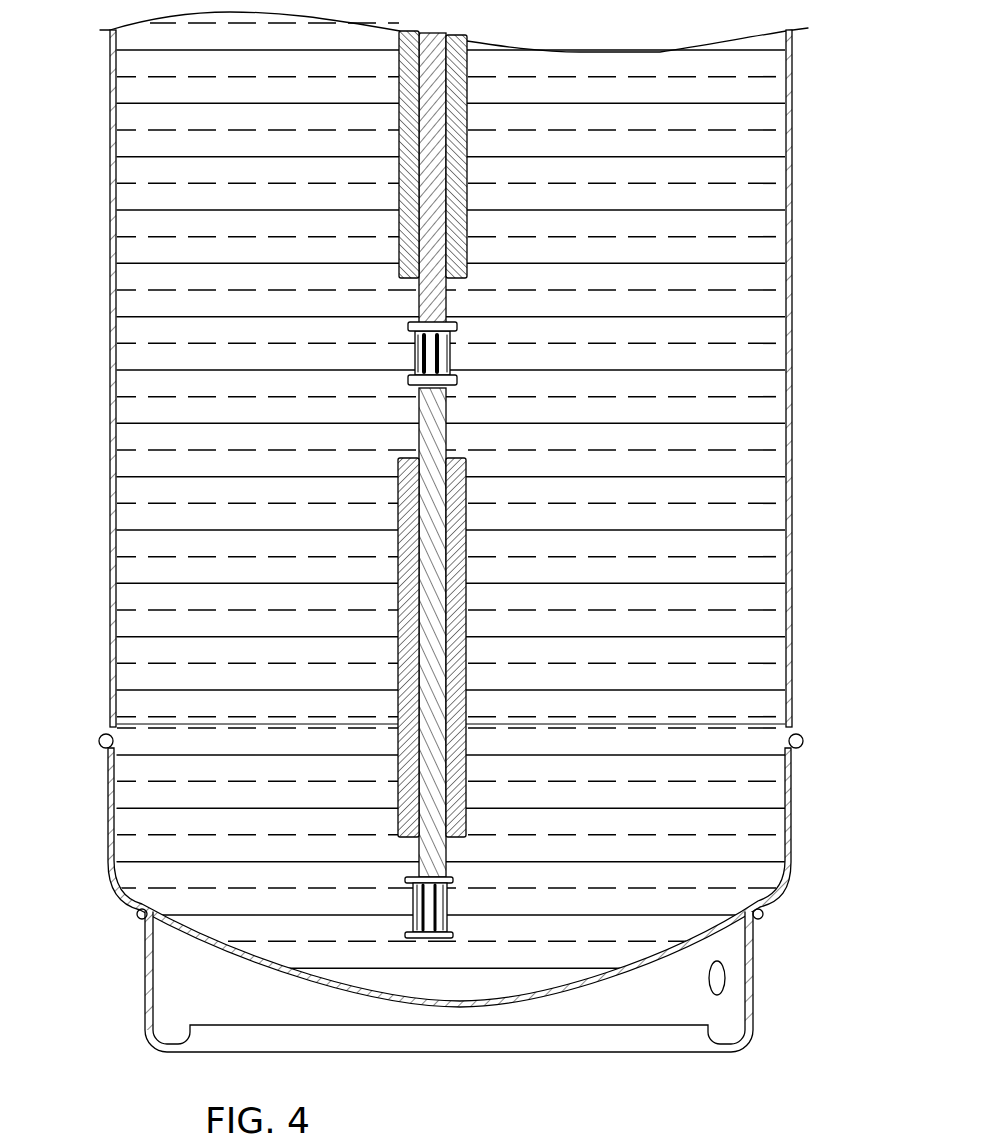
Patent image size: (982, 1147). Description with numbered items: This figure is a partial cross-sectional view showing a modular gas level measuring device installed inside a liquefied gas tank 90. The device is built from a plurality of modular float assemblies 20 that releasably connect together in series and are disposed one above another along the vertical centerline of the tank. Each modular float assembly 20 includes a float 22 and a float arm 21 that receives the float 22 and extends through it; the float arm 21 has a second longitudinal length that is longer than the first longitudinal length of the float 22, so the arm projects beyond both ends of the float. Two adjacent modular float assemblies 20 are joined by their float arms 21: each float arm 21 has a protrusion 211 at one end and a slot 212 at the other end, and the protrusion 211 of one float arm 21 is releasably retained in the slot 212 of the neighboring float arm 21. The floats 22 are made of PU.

The modular float assembly 20 is at (397, 125).
The float arm 21 is at (432, 418).
The float 22 is at (398, 577).
The protrusion 211 is at (412, 331).
The slot 212 is at (417, 338).
The liquefied gas tank 90 is at (110, 231).